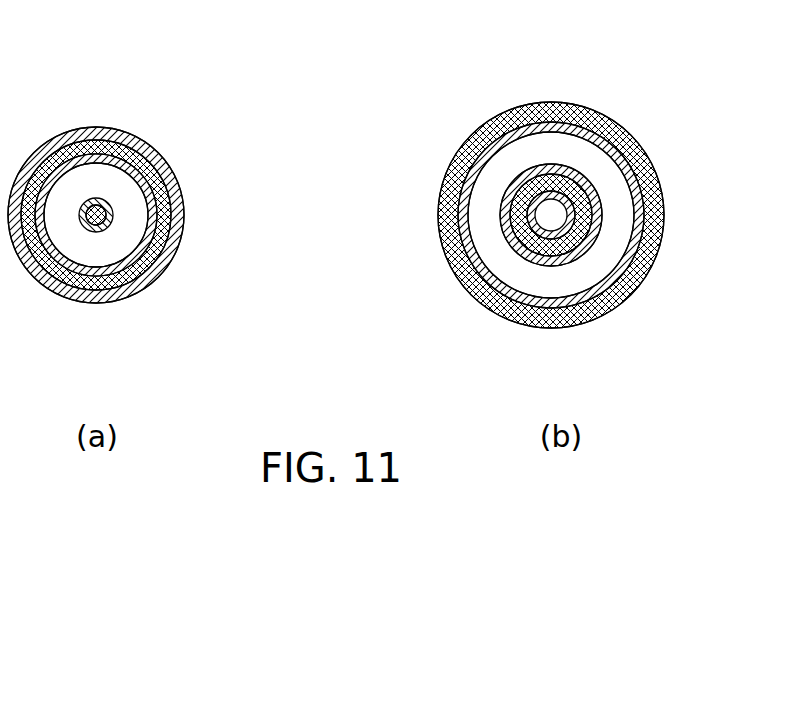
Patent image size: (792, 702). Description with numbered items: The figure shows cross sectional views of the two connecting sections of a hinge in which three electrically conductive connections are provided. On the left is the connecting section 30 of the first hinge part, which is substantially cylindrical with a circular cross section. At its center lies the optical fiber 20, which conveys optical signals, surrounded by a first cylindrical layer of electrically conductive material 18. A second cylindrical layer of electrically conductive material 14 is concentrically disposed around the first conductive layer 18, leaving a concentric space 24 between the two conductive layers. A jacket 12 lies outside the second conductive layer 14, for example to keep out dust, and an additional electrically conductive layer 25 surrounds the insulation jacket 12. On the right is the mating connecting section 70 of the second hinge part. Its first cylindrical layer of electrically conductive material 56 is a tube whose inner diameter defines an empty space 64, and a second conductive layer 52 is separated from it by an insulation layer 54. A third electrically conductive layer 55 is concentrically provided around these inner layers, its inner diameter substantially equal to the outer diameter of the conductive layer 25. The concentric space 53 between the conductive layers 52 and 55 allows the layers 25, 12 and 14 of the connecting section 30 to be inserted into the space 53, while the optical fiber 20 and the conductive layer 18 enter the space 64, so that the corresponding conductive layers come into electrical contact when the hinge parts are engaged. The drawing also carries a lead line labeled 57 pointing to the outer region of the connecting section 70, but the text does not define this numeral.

The jacket 12 is at (163, 250).
The second cylindrical layer of electrically conductive material 14 is at (135, 280).
The first cylindrical layer of electrically conductive material 18 is at (92, 223).
The optical fiber 20 is at (95, 207).
The concentric space 24 is at (71, 182).
The additional electrically conductive layer 25 is at (180, 213).
The connecting section 30 is at (190, 129).
The second cylindrical layer of electrically conductive material 52 is at (588, 178).
The concentric space 53 is at (623, 208).
The insulation layer 54 is at (545, 167).
The third electrically conductive layer 55 is at (635, 288).
The first cylindrical layer of electrically conductive material 56 is at (547, 220).
The outer braided layer 57 is at (580, 323).
The empty space 64 is at (513, 238).
The connecting section 70 is at (447, 104).